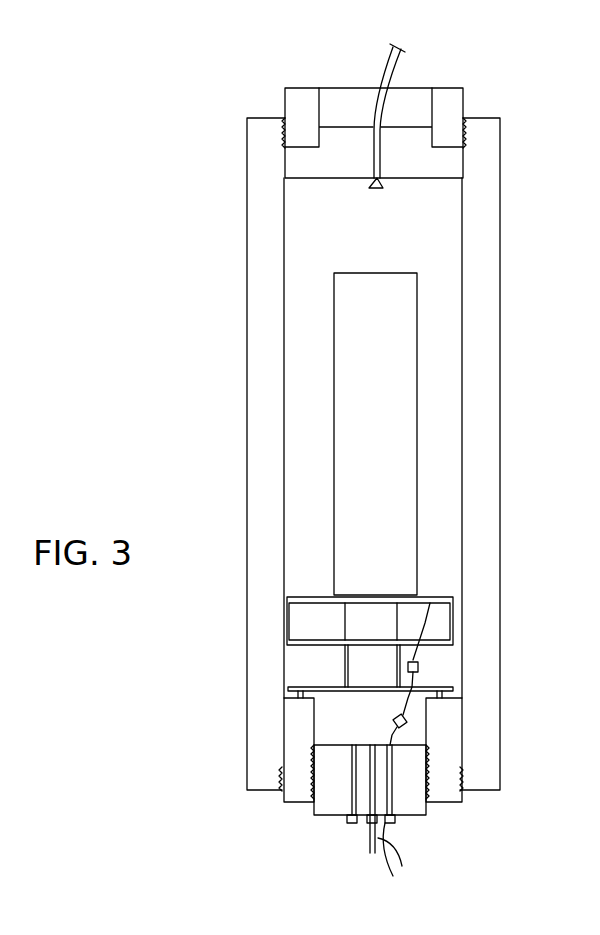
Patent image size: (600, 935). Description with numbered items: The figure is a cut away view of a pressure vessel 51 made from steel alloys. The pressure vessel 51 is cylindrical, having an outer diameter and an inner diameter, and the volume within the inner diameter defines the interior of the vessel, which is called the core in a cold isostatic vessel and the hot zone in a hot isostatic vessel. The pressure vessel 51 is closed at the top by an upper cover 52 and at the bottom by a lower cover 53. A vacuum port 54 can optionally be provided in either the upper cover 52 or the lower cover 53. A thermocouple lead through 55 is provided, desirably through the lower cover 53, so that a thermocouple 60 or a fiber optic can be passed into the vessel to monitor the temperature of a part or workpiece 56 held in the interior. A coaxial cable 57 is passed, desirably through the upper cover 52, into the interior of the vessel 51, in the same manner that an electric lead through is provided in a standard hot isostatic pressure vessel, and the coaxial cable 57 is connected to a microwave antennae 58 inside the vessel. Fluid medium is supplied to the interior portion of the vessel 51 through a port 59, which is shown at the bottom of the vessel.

The pressure vessel 51 is at (248, 164).
The upper cover 52 is at (352, 135).
The lower cover 53 is at (330, 798).
The vacuum port 54 is at (351, 824).
The thermocouple lead through 55 is at (396, 823).
The workpiece 56 is at (397, 327).
The coaxial cable 57 is at (390, 60).
The microwave antennae 58 is at (383, 186).
The port 59 is at (391, 828).
The thermocouple 60 is at (427, 623).